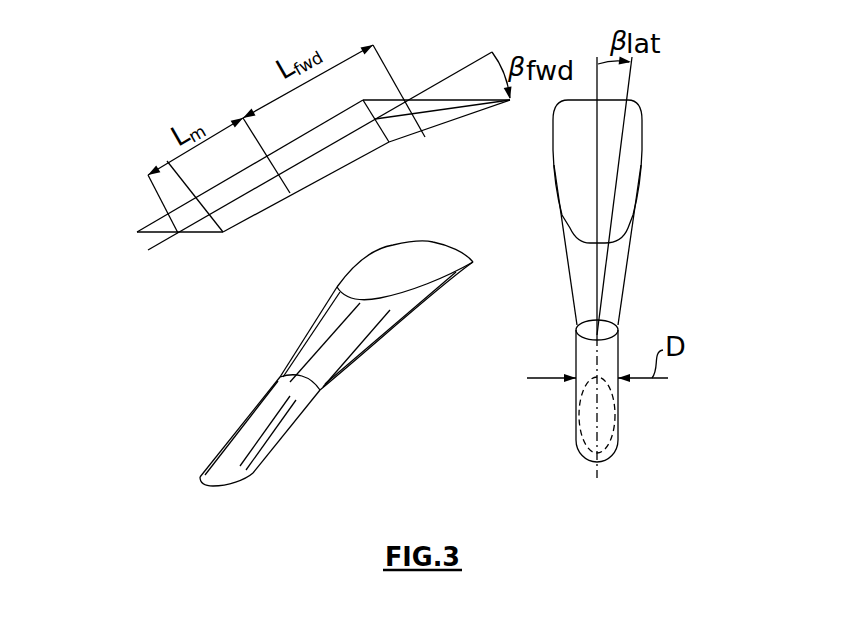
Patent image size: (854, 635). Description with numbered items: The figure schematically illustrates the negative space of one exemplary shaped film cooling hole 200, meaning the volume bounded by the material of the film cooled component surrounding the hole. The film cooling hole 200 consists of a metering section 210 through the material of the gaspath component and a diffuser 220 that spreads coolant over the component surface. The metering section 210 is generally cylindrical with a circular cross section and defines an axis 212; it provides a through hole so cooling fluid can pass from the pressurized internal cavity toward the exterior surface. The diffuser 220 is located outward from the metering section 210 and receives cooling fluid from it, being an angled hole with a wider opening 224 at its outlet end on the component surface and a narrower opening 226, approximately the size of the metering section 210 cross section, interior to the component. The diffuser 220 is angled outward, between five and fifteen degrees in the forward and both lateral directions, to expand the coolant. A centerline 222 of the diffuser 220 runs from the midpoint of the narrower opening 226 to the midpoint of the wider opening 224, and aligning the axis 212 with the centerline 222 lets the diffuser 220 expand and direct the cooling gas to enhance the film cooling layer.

The film cooling hole 200 is at (242, 360).
The metering section 210 is at (167, 161).
The axis 212 is at (238, 202).
The diffuser 220 is at (307, 135).
The centerline 222 is at (354, 160).
The wider opening 224 is at (467, 100).
The narrower opening 226 is at (300, 190).